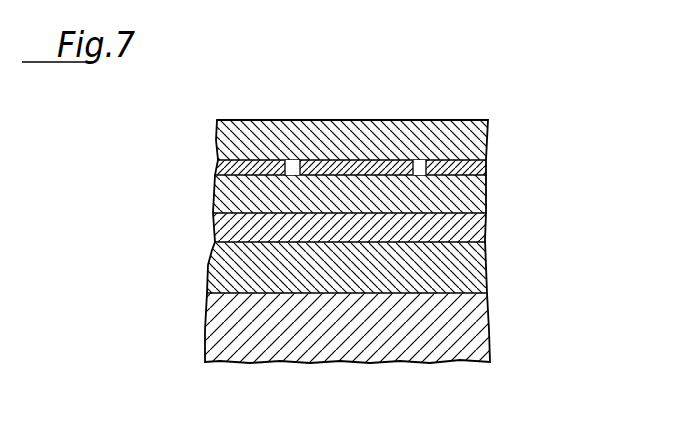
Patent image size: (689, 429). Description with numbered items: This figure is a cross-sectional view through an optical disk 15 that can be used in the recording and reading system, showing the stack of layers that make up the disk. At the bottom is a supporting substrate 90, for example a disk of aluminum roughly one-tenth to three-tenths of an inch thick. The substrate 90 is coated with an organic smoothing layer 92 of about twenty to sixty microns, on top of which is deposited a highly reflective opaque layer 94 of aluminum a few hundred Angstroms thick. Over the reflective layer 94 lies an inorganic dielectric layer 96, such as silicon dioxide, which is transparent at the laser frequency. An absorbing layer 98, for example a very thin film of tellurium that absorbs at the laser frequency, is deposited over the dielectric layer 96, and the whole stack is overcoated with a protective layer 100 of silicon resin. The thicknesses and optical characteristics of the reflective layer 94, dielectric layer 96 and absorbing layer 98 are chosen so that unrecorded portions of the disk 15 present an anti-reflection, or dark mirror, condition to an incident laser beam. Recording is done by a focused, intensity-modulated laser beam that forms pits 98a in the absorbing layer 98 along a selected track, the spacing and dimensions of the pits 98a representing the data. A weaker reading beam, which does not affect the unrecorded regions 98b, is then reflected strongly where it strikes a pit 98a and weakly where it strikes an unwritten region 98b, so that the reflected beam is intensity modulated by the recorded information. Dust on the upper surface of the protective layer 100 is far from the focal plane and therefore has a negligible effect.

The disk 15 is at (213, 247).
The supporting substrate 90 is at (487, 328).
The organic smoothing layer 92 is at (486, 272).
The highly reflective opaque layer 94 is at (486, 235).
The inorganic dielectric layer 96 is at (486, 200).
The absorbing layer 98 is at (486, 166).
The pits 98a is at (292, 161).
The unrecorded regions 98b is at (356, 162).
The protective layer 100 is at (486, 142).